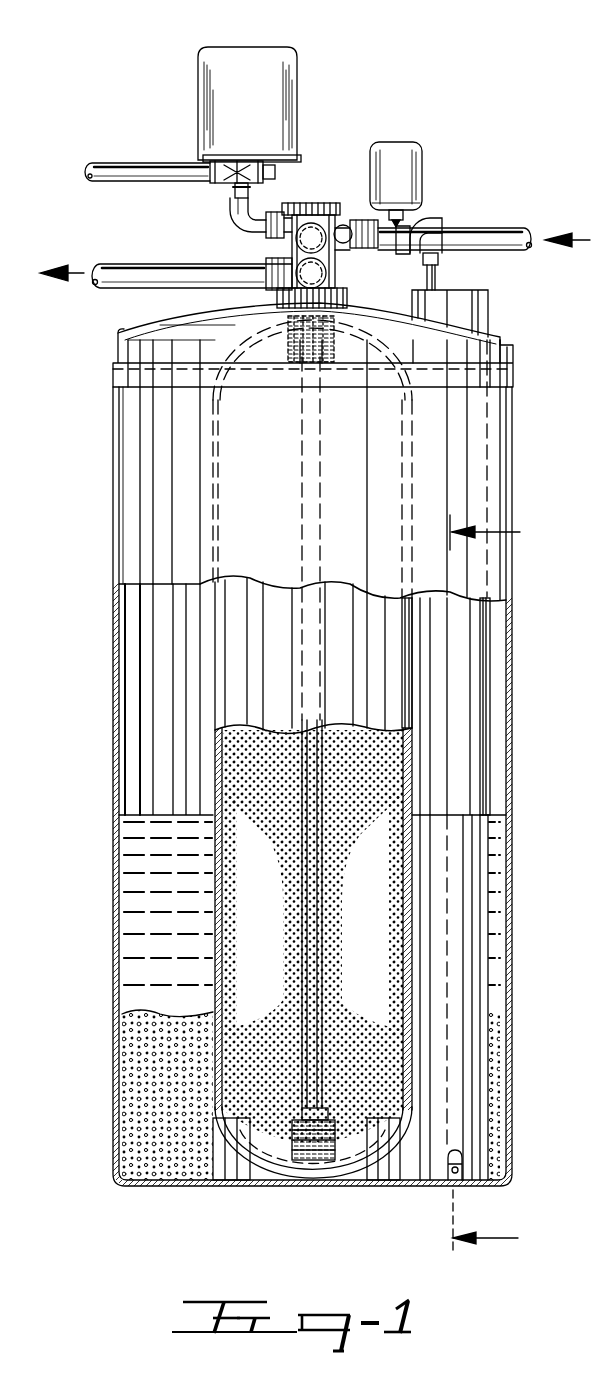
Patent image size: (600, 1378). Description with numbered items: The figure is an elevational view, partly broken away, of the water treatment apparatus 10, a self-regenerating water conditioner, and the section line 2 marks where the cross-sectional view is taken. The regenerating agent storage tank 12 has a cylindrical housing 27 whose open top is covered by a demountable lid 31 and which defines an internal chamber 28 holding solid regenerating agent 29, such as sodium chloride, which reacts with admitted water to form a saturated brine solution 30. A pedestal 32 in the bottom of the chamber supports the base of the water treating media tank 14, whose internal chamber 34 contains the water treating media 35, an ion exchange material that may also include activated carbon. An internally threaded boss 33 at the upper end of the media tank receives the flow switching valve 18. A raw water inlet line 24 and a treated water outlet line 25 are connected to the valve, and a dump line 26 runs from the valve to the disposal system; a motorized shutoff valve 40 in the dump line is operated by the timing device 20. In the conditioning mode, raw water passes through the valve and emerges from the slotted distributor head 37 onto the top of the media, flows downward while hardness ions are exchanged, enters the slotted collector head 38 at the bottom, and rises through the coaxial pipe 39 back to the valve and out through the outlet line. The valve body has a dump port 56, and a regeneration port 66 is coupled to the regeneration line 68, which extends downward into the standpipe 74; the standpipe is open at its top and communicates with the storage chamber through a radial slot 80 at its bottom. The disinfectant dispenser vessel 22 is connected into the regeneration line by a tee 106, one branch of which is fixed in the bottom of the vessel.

The water treatment apparatus 10 is at (318, 744).
The regenerating agent storage tank 12 is at (506, 694).
The water treating media tank 14 is at (217, 673).
The flow switching valve 18 is at (305, 206).
The timing device 20 is at (300, 80).
The disinfectant dispenser vessel 22 is at (422, 160).
The raw water inlet line 24 is at (494, 228).
The treated water outlet line 25 is at (102, 264).
The dump line 26 is at (103, 163).
The housing 27 is at (508, 772).
The internal chamber 28 is at (126, 612).
The regenerating agent 29 is at (136, 1068).
The saturated brine solution 30 is at (133, 881).
The lid 31 is at (112, 373).
The pedestal 32 is at (217, 1148).
The internally threaded boss 33 is at (347, 306).
The internal chamber 34 is at (224, 742).
The water treating media 35 is at (232, 788).
The distributor head 37 is at (370, 342).
The collector head 38 is at (322, 1138).
The pipe 39 is at (323, 910).
The motorized shutoff valve 40 is at (214, 184).
The dump port 56 is at (266, 226).
The regeneration port 66 is at (357, 220).
The regeneration line 68 is at (438, 278).
The standpipe 74 is at (488, 629).
The radial slot 80 is at (452, 1150).
The tee 106 is at (432, 222).
The section line 2- 2 is at (501, 886).